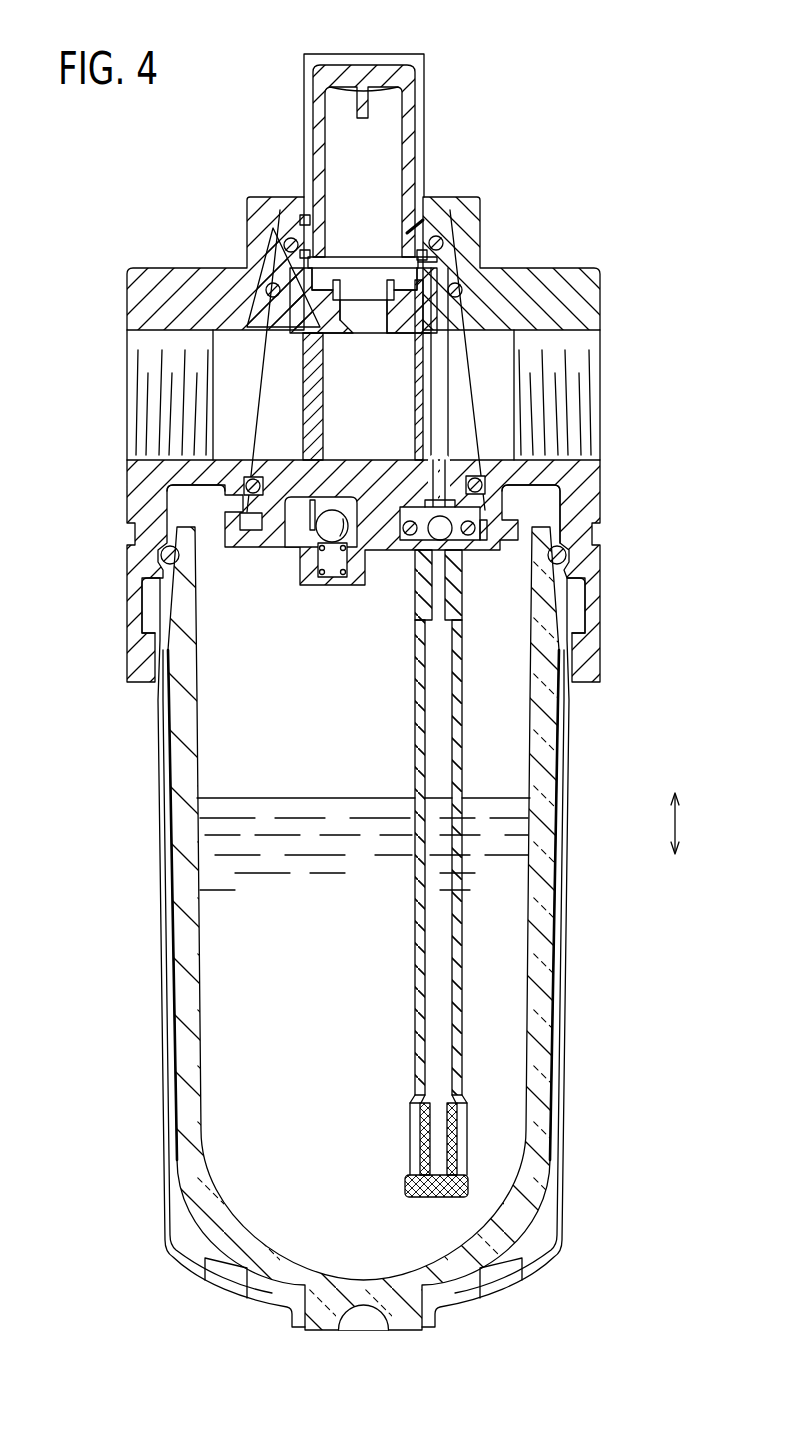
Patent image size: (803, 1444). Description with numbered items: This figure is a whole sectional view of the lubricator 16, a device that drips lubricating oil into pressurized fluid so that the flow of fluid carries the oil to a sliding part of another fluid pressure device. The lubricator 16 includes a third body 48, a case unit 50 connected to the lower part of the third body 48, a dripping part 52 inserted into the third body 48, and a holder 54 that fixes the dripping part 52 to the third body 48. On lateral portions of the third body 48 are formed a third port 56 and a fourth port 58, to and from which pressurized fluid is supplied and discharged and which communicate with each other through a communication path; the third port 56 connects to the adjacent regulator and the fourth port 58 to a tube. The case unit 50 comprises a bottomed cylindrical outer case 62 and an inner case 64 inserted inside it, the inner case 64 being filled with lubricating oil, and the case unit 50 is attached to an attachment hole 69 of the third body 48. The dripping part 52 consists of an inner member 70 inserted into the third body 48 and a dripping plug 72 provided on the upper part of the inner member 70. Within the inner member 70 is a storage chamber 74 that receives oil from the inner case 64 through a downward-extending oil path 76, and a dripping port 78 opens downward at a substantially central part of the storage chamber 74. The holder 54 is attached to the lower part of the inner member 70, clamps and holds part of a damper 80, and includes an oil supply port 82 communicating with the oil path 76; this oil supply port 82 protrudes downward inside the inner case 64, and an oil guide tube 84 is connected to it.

The lubricator 16 is at (612, 180).
The third body 48 is at (136, 266).
The case unit 50 is at (157, 1222).
The dripping part 52 is at (438, 103).
The holder 54 is at (243, 552).
The third port 56 is at (150, 398).
The fourth port 58 is at (578, 385).
The outer case 62 is at (557, 1163).
The inner case 64 is at (540, 1080).
The attachment hole 69 is at (553, 498).
The inner member 70 is at (470, 318).
The dripping plug 72 is at (385, 83).
The storage chamber 74 is at (372, 284).
The oil path 76 is at (440, 384).
The dripping port 78 is at (355, 335).
The damper 80 is at (322, 428).
The oil supply port 82 is at (440, 584).
The oil guide tube 84 is at (418, 968).